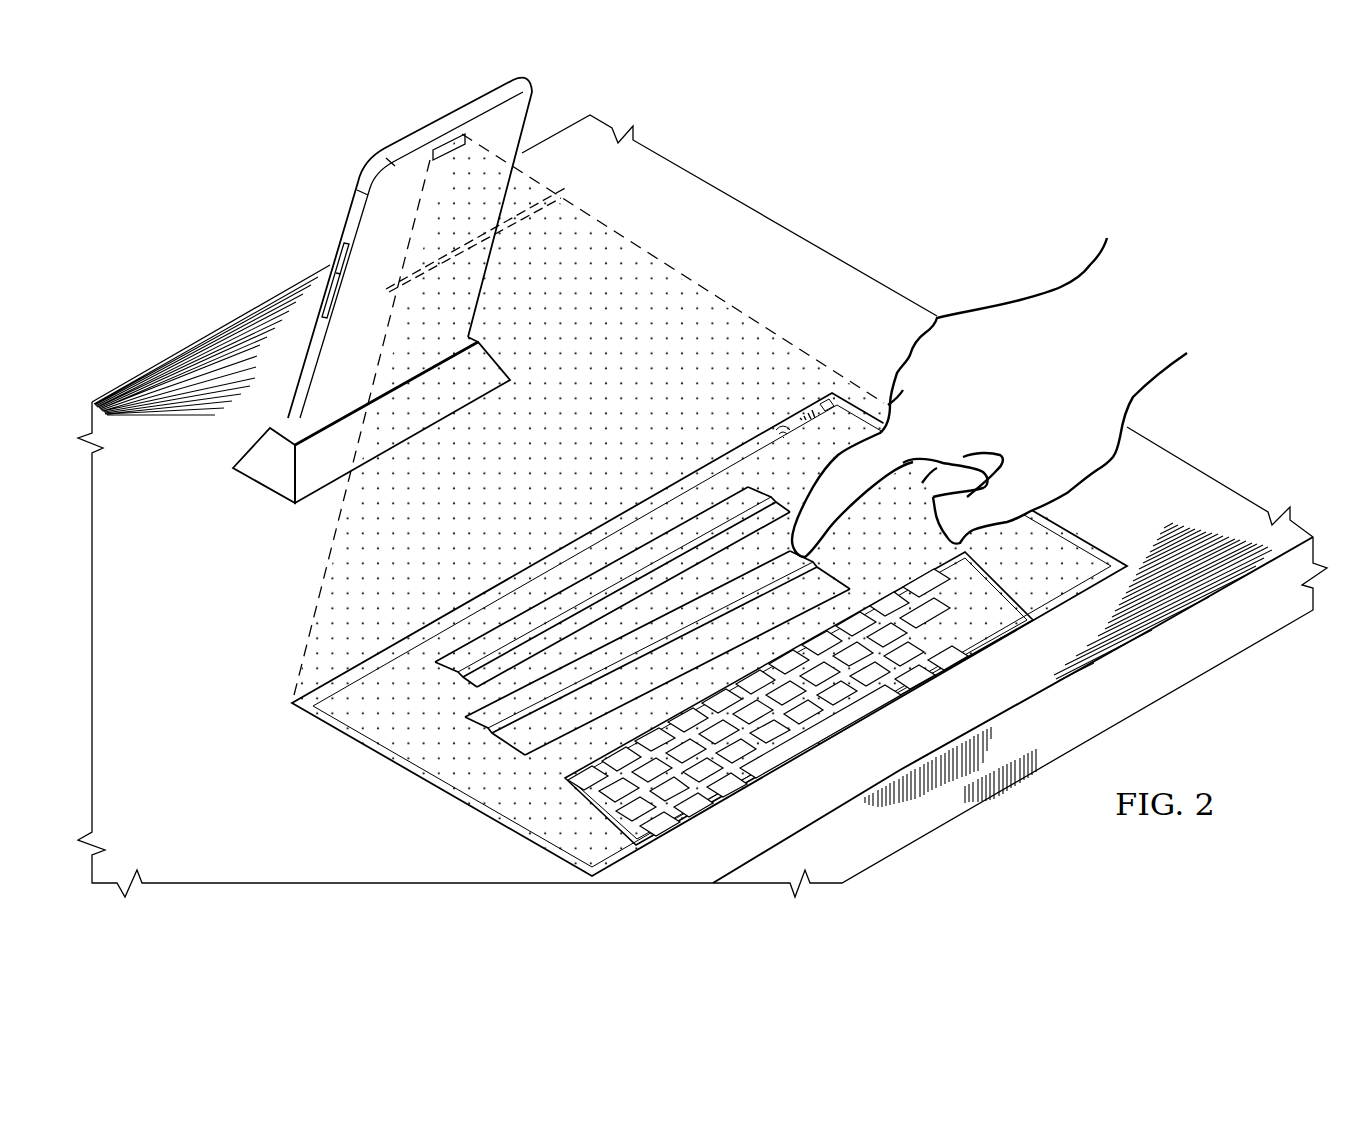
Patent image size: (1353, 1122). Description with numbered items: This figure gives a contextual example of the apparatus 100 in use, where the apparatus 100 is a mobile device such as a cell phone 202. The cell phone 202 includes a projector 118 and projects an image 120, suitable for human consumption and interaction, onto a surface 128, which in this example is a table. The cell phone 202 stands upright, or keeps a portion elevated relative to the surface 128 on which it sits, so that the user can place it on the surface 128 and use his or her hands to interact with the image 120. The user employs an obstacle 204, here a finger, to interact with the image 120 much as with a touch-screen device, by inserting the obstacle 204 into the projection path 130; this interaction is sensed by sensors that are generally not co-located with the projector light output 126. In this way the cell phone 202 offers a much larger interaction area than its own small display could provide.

The apparatus 100 is at (401, 246).
The projector 118 is at (455, 137).
The projector light output 126 is at (416, 160).
The surface 128 is at (760, 247).
The projection path 130 is at (563, 190).
The cell phone 202 is at (338, 250).
The obstacle 204 is at (843, 440).
The image 120 is at (458, 793).